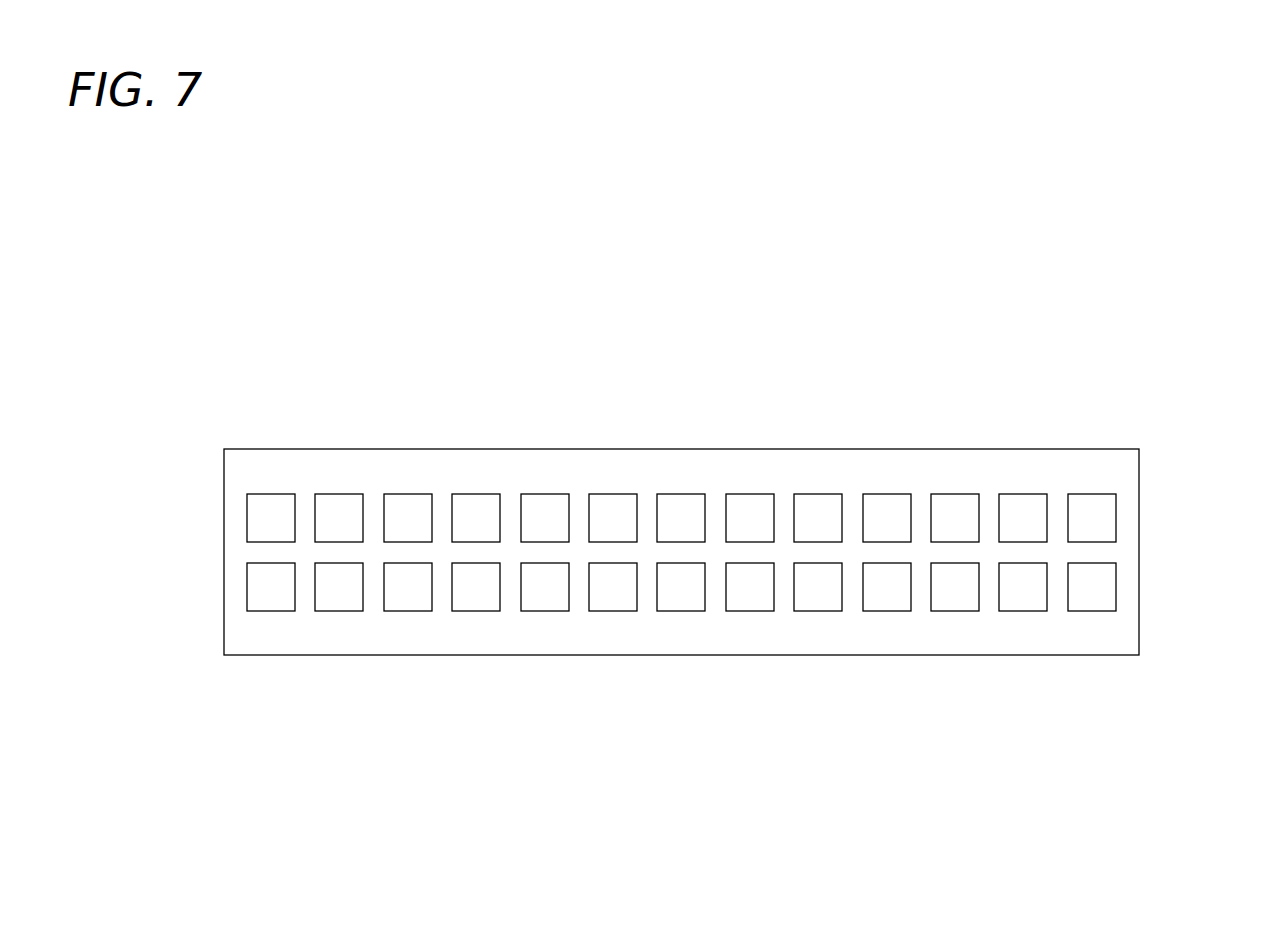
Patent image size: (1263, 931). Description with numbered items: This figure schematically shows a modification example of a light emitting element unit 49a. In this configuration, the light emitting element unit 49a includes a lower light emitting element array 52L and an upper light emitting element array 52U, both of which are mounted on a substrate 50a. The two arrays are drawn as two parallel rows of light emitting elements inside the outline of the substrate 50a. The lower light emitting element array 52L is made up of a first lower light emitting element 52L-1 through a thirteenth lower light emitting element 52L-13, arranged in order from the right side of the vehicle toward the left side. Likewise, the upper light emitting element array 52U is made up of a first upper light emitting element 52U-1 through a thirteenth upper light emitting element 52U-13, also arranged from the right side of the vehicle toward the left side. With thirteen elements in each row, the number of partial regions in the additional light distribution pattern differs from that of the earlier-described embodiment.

The light emitting element unit 49a is at (773, 424).
The substrate 50a is at (385, 470).
The lower light emitting element array 52L is at (1156, 515).
The upper light emitting element array 52U is at (1156, 585).
The first lower light emitting element 52L-1 is at (247, 525).
The thirteenth lower light emitting element 52L-13 is at (1068, 493).
The first upper light emitting element 52U-1 is at (247, 595).
The thirteenth upper light emitting element 52U-13 is at (1068, 613).